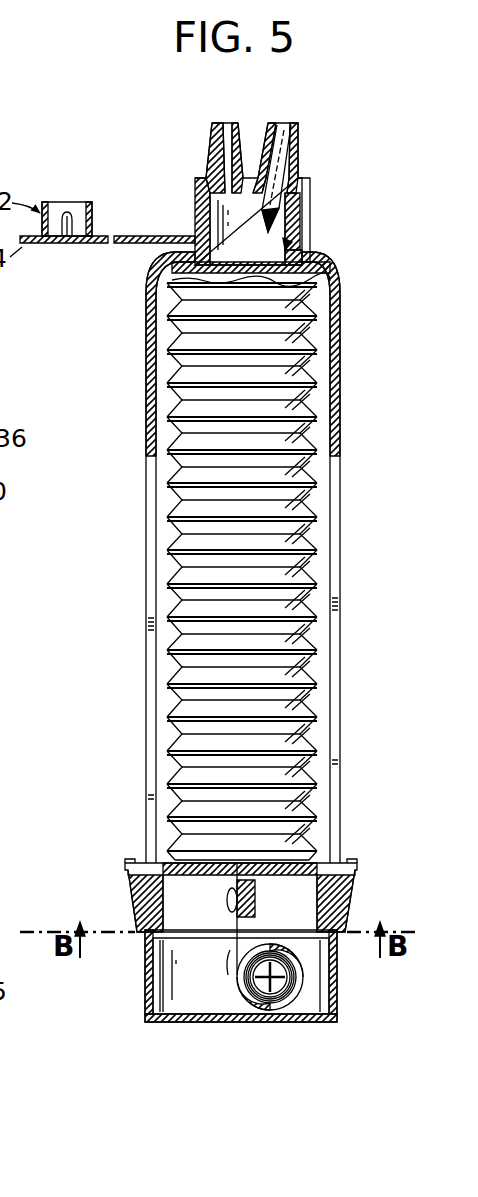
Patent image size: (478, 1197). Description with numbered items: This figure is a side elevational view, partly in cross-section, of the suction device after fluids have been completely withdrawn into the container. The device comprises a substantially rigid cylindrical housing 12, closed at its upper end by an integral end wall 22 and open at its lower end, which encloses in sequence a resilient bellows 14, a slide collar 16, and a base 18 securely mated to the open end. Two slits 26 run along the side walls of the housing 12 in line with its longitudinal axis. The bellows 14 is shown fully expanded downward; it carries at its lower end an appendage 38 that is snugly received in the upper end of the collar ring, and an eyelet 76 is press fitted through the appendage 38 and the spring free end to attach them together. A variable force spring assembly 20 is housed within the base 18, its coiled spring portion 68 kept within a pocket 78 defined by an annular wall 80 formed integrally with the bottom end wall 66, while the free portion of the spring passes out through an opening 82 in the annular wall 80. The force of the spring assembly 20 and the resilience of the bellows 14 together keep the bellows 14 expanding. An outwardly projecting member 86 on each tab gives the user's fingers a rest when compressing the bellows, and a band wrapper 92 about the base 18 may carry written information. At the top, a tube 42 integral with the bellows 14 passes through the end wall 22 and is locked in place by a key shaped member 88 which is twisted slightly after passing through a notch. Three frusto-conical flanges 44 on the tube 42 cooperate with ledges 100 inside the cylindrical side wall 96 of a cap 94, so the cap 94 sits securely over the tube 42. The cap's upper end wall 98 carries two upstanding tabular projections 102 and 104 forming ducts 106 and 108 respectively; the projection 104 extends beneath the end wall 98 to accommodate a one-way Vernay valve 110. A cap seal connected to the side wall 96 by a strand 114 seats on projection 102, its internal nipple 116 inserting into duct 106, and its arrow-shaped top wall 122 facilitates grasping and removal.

The housing 12 is at (150, 382).
The bellows 14 is at (168, 548).
The slide collar 16 is at (132, 893).
The base 18 is at (147, 980).
The variable force spring assembly 20 is at (236, 938).
The end wall 22 is at (305, 263).
The slits 26 is at (150, 628).
The appendage 38 is at (253, 890).
The tube 42 is at (283, 238).
The flanges 44 is at (222, 232).
The bottom end wall 66 is at (195, 1022).
The coiled spring portion 68 is at (280, 1000).
The eyelet 76 is at (228, 900).
The pocket 78 is at (262, 992).
The annular wall 80 is at (304, 985).
The opening 82 is at (230, 958).
The outwardly projecting member 86 is at (130, 860).
The key shaped member 88 is at (198, 240).
The band wrapper 92 is at (147, 995).
The cap 94 is at (306, 180).
The cylindrical side wall 96 is at (200, 186).
The upper end wall 98 is at (245, 185).
The ledges 100 is at (208, 205).
The tabular projection 102 is at (212, 152).
The tabular projection 104 is at (300, 152).
The duct 106 is at (228, 123).
The duct 108 is at (280, 128).
The one-way Vernay valve 110 is at (287, 225).
The strand 114 is at (152, 243).
The internal nipple 116 is at (62, 212).
The arrow-shaped top wall 122 is at (63, 236).